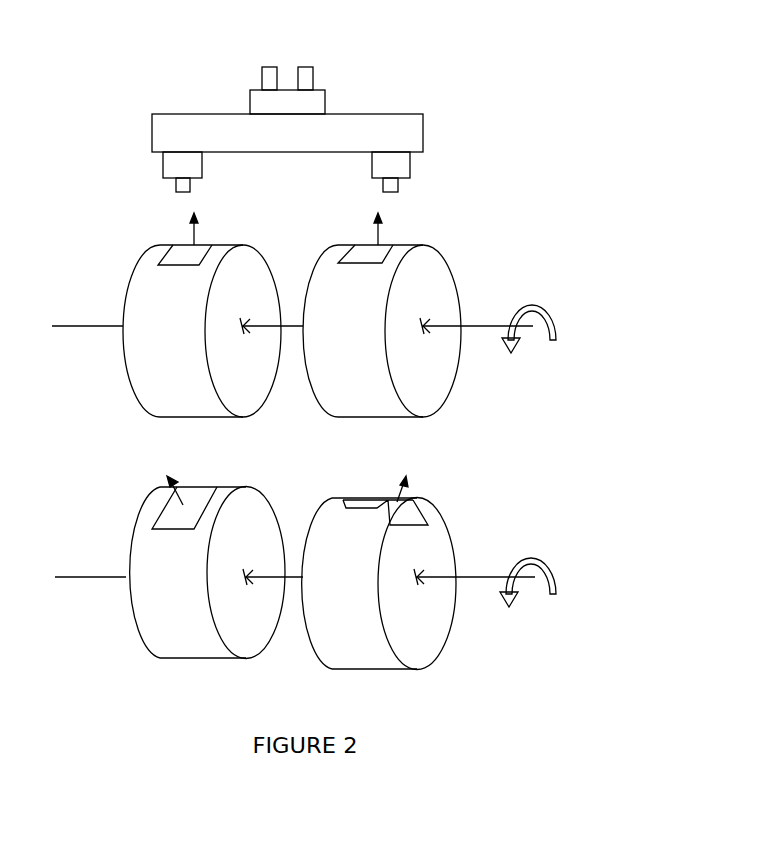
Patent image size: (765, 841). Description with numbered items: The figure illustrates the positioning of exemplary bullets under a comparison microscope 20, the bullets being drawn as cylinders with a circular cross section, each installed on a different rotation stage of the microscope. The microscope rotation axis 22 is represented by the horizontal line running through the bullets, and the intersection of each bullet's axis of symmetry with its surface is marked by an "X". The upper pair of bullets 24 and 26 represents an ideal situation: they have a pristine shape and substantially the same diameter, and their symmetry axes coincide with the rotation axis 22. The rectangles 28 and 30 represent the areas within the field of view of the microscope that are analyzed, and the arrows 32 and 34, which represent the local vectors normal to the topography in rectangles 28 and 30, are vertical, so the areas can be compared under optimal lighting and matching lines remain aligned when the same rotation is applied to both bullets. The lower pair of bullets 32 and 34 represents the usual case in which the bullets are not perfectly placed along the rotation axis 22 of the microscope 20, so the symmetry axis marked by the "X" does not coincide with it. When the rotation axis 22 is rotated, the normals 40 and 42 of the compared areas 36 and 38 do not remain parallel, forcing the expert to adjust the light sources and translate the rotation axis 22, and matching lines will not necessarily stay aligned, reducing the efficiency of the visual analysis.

The comparison microscope 20 is at (343, 125).
The microscope rotation axis 22 is at (480, 323).
The bullet 24 is at (157, 295).
The bullet 26 is at (416, 275).
The rectangle 28 is at (175, 257).
The rectangle 30 is at (362, 255).
The arrow / bullet 32 is at (198, 232).
The arrow / bullet 34 is at (373, 235).
The area 36 is at (155, 518).
The area 38 is at (405, 515).
The normal 40 is at (178, 495).
The normal 42 is at (395, 498).